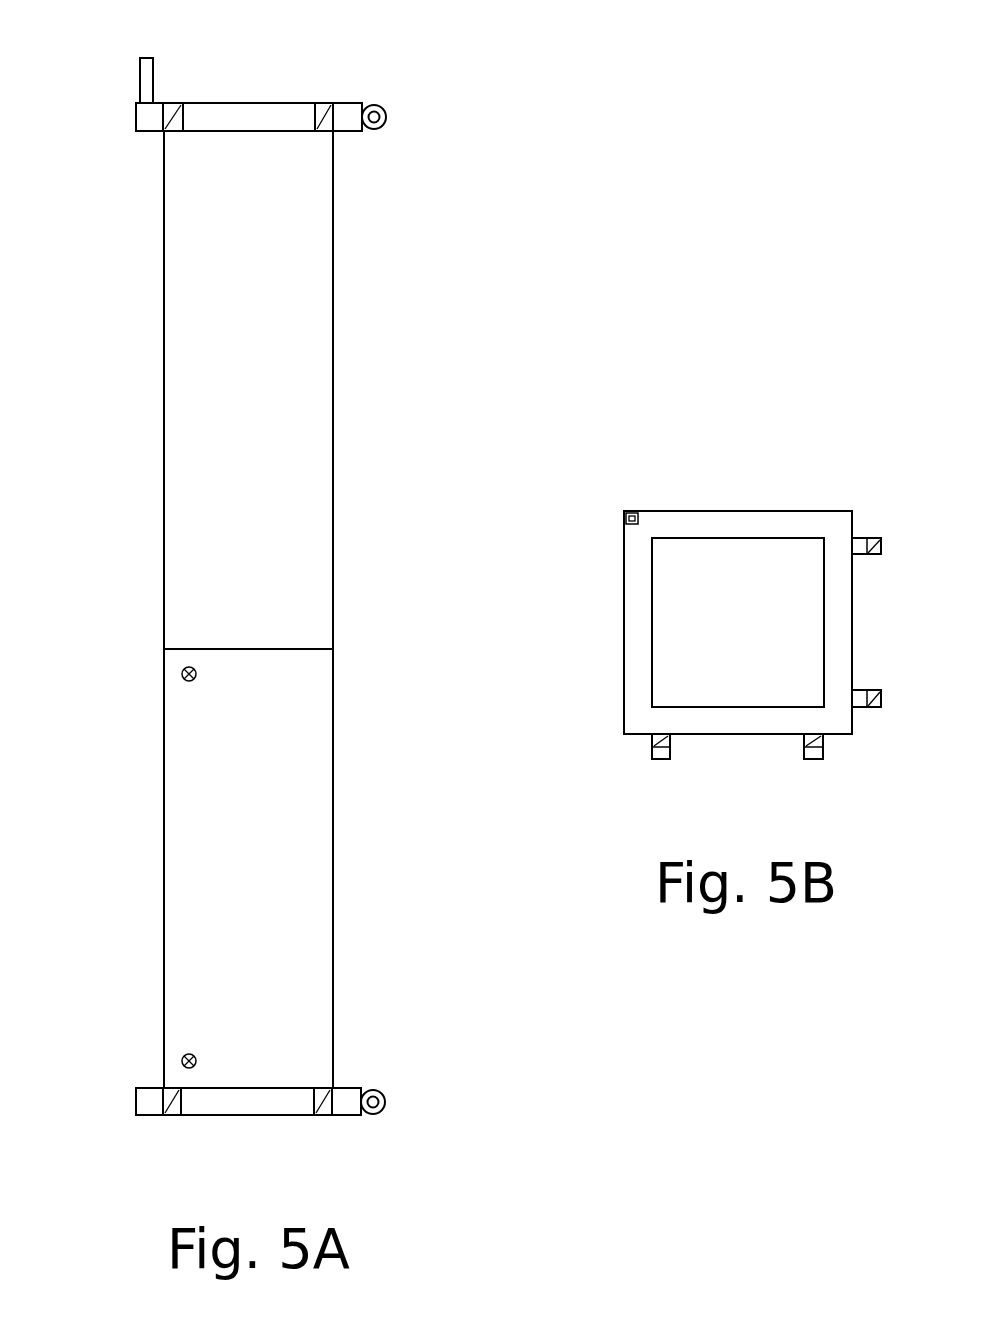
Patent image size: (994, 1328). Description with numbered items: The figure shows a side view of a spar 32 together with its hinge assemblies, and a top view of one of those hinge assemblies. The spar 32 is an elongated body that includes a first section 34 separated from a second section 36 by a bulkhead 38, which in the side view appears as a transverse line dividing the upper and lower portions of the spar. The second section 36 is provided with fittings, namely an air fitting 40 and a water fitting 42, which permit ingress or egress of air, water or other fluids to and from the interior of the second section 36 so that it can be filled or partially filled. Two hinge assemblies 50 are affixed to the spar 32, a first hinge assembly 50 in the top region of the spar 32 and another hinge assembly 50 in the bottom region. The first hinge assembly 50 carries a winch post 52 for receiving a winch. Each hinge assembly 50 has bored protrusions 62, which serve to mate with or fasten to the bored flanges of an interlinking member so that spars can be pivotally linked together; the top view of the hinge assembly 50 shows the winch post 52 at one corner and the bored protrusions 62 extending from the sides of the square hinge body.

In FIG. 5A, the spar 32 is at (285, 609).
In FIG. 5A, the first section 34 is at (164, 474).
In FIG. 5A, the second section 36 is at (163, 923).
In FIG. 5A, the bulkhead 38 is at (333, 649).
In FIG. 5A, the air fitting 40 is at (190, 682).
In FIG. 5A, the water fitting 42 is at (189, 1054).
In FIG. 5A, the hinge assembly 50 is at (250, 103).
In FIG. 5B, the hinge assembly 50 is at (706, 510).
In FIG. 5A, the winch post 52 is at (138, 78).
In FIG. 5B, the winch post 52 is at (625, 515).
In FIG. 5A, the bored protrusion 62 is at (387, 117).
In FIG. 5B, the bored protrusion 62 is at (881, 546).